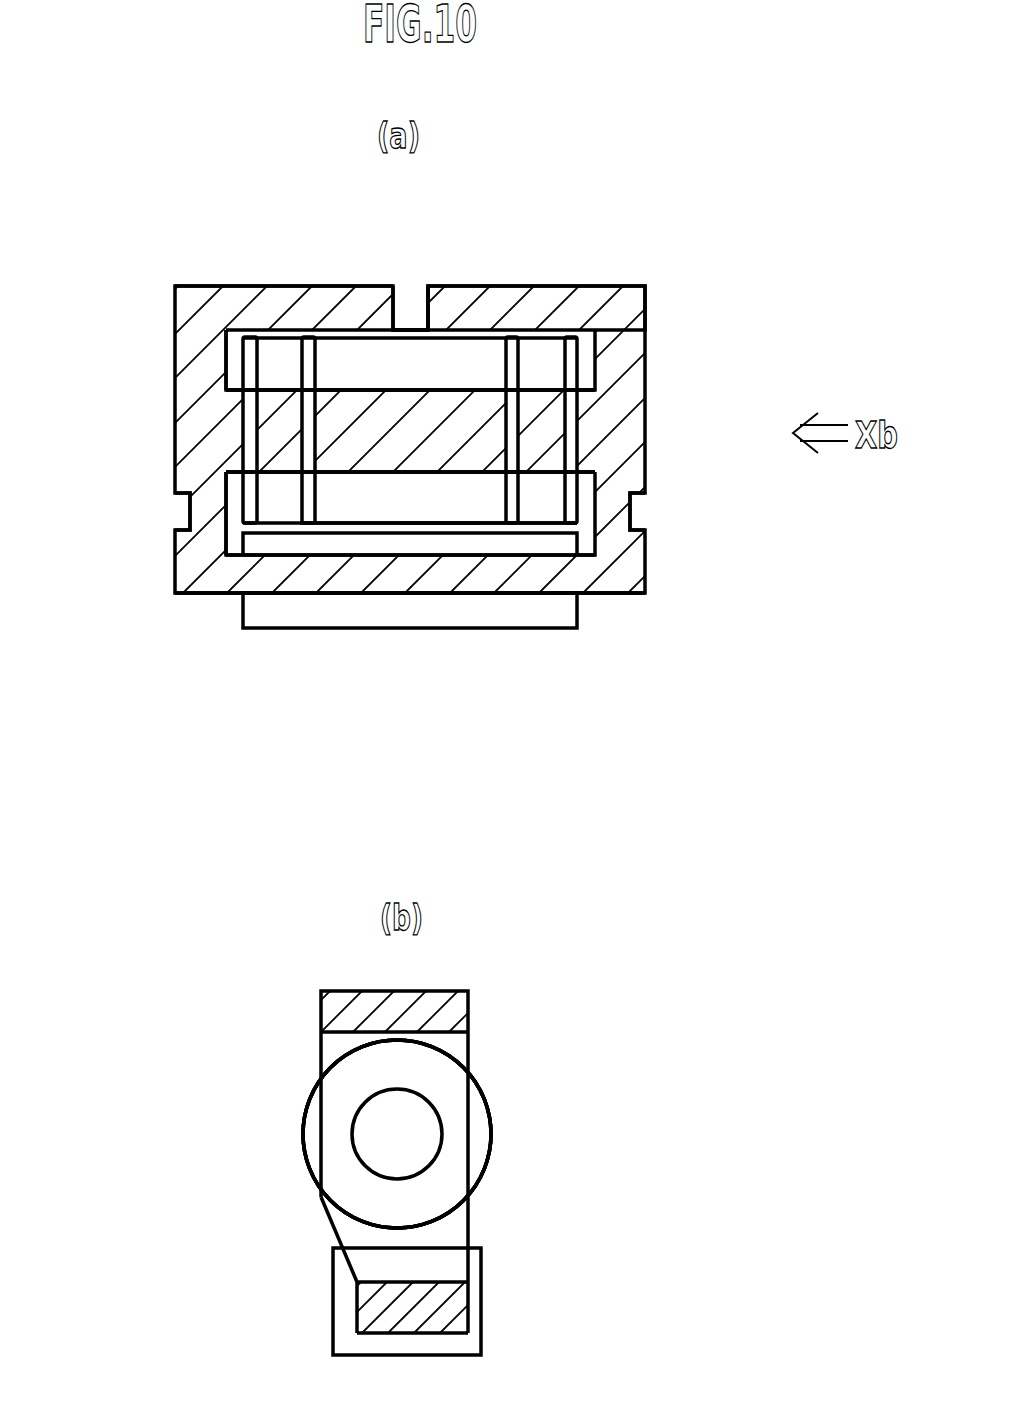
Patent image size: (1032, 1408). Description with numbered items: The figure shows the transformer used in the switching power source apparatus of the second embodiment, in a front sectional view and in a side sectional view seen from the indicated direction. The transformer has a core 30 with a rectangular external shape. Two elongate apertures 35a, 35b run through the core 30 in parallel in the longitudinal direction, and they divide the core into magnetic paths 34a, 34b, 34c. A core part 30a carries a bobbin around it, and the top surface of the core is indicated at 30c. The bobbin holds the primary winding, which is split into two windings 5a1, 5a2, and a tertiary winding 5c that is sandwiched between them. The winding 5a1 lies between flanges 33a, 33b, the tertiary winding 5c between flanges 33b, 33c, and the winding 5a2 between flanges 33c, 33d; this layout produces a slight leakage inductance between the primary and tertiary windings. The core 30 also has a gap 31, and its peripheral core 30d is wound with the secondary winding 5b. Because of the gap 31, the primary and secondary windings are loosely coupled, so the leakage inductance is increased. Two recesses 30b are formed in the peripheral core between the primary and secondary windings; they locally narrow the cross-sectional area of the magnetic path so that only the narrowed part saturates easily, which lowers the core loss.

The core 30 is at (645, 340).
The core part 30a is at (435, 473).
The recesses 30b is at (178, 518).
The top surface of housing 30c is at (340, 300).
The peripheral core 30d is at (597, 592).
The gap 31 is at (415, 300).
The flange 33a is at (240, 512).
The flange 33b is at (303, 512).
The flange 33c is at (520, 512).
The flange 33d is at (598, 508).
The magnetic path 34a is at (583, 303).
The magnetic path 34b is at (585, 433).
The magnetic path 34c is at (588, 573).
The elongate aperture 35a is at (230, 343).
The elongate aperture 35b is at (237, 538).
The winding 5a1 is at (285, 342).
The winding 5a2 is at (543, 342).
The secondary winding 5b is at (493, 628).
The tertiary winding 5c is at (368, 523).